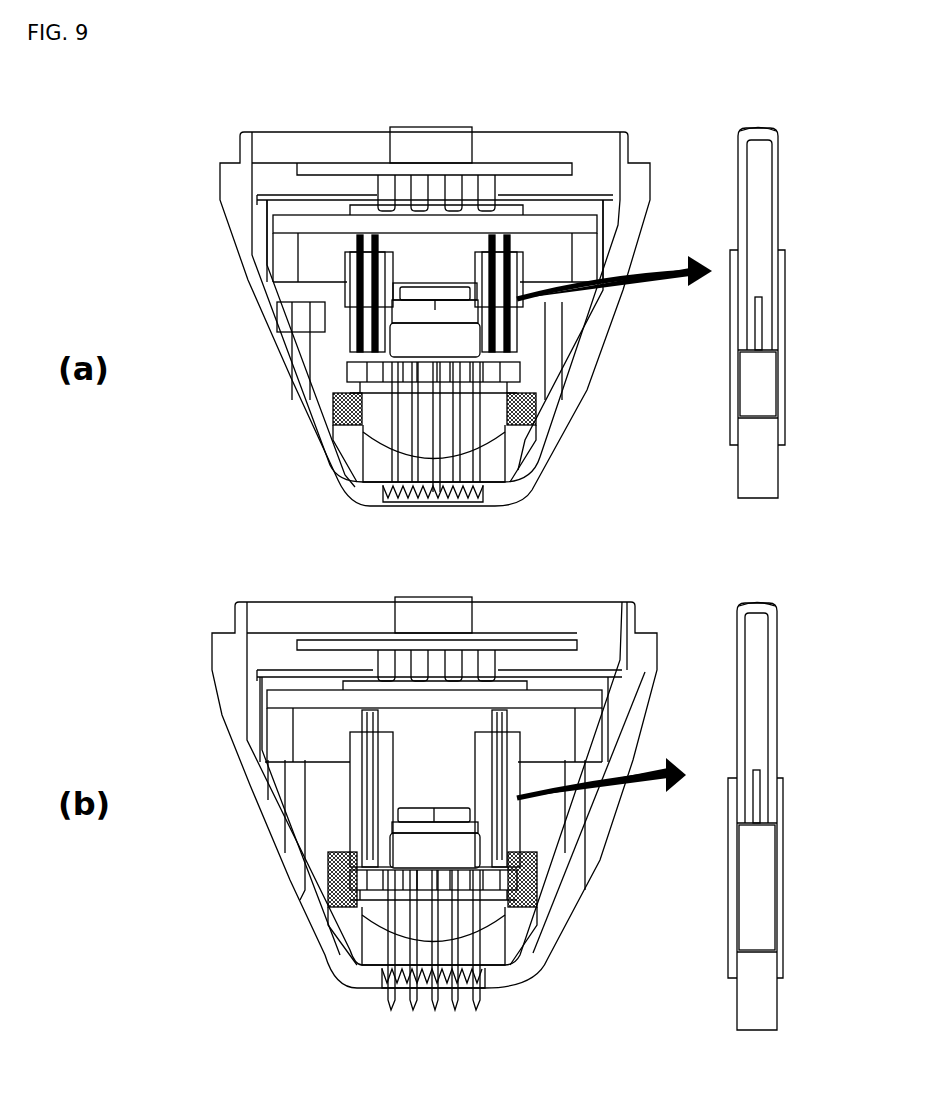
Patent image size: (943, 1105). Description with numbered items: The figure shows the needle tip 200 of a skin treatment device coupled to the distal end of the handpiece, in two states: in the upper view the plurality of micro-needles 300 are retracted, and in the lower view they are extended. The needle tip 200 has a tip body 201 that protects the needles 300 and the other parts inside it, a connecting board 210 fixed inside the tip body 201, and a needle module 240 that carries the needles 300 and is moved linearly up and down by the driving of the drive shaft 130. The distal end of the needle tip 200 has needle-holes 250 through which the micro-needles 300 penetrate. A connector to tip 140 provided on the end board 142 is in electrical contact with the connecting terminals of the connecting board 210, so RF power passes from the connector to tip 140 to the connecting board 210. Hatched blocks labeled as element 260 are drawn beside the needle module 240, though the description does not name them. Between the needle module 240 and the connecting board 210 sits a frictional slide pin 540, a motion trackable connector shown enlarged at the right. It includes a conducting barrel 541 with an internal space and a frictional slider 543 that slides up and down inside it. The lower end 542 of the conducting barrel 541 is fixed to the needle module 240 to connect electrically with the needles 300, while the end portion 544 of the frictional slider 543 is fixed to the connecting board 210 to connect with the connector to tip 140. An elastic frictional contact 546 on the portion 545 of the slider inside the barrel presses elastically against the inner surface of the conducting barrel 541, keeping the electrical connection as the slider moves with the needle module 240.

The drive shaft 130 is at (400, 150).
The end board 142 is at (296, 168).
The connector to tip 140 is at (380, 190).
The connecting board 210 is at (285, 225).
The frictional slide pin 540 is at (348, 278).
The needle module 240 is at (385, 373).
The elastic member 260 is at (330, 403).
The micro-needles 300 is at (395, 455).
The needle tip 200 is at (594, 391).
The tip body 201 is at (560, 423).
The needle-holes 250 is at (482, 505).
The end portion of the frictional slider 544 is at (758, 128).
The frictional slider 543 is at (779, 175).
The conducting barrel 541 is at (785, 274).
The elastic frictional contact 546 is at (778, 327).
The portion of the frictional slider in the conducting barrel 545 is at (762, 352).
The lower end of the conducting barrel 542 is at (778, 478).